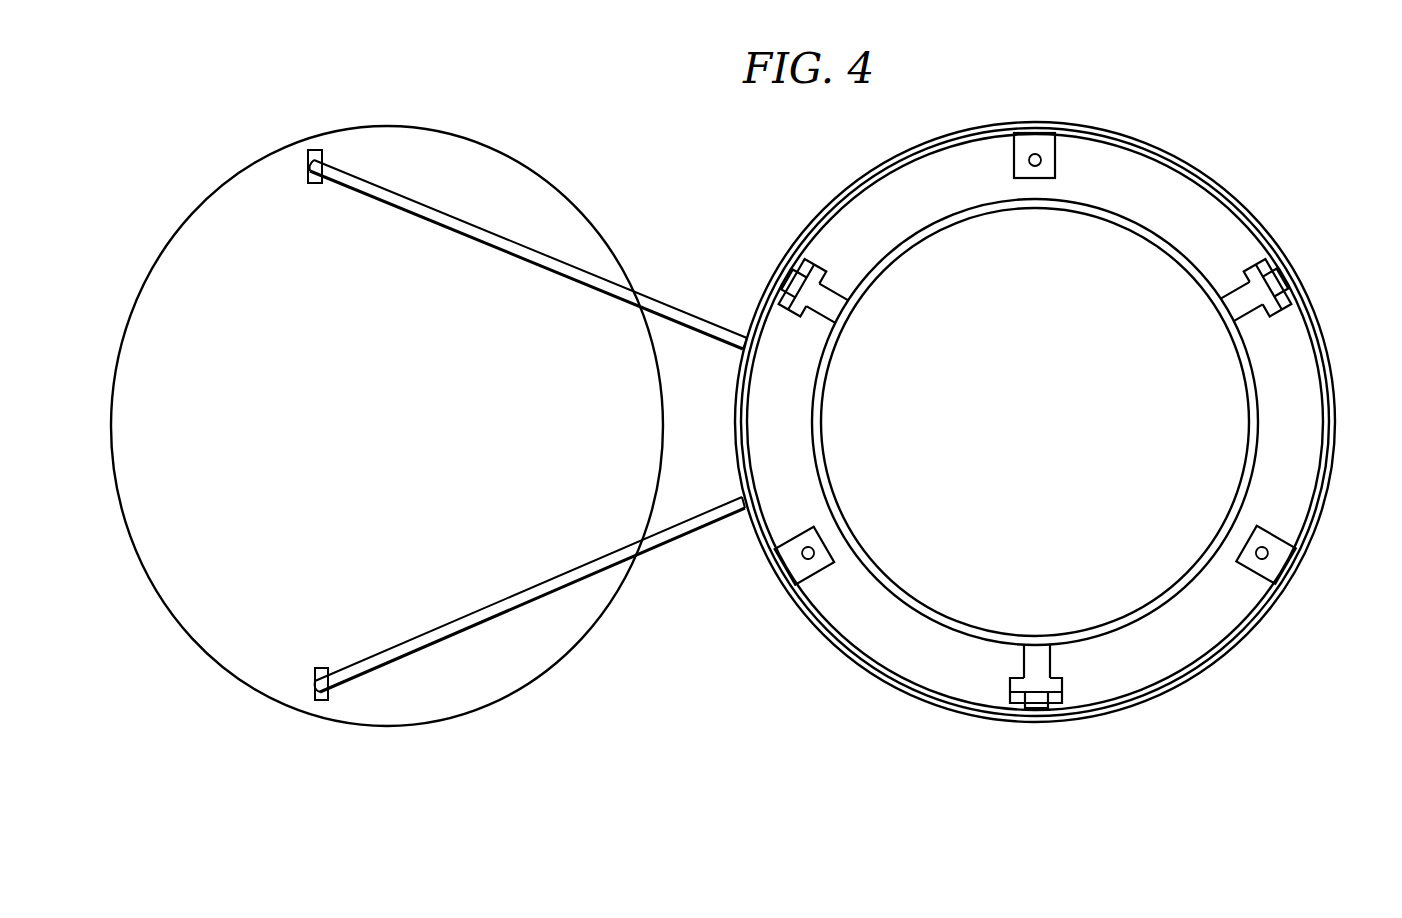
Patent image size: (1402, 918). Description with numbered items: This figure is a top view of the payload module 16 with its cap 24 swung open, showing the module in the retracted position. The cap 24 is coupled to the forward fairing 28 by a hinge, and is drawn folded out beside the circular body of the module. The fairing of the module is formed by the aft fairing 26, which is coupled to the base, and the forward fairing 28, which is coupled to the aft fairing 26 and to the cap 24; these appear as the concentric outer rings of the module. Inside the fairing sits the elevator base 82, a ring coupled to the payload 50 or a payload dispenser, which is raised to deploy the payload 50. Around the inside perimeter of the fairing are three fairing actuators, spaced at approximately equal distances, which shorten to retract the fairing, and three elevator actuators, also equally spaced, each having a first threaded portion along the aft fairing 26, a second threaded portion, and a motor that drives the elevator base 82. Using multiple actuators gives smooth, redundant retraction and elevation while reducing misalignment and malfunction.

The payload module 16 is at (1067, 377).
The cap 24 is at (382, 127).
The aft fairing 26 is at (1312, 372).
The forward fairing 28 is at (1325, 428).
The payload 50 is at (1047, 435).
The elevator base 82 is at (1240, 364).